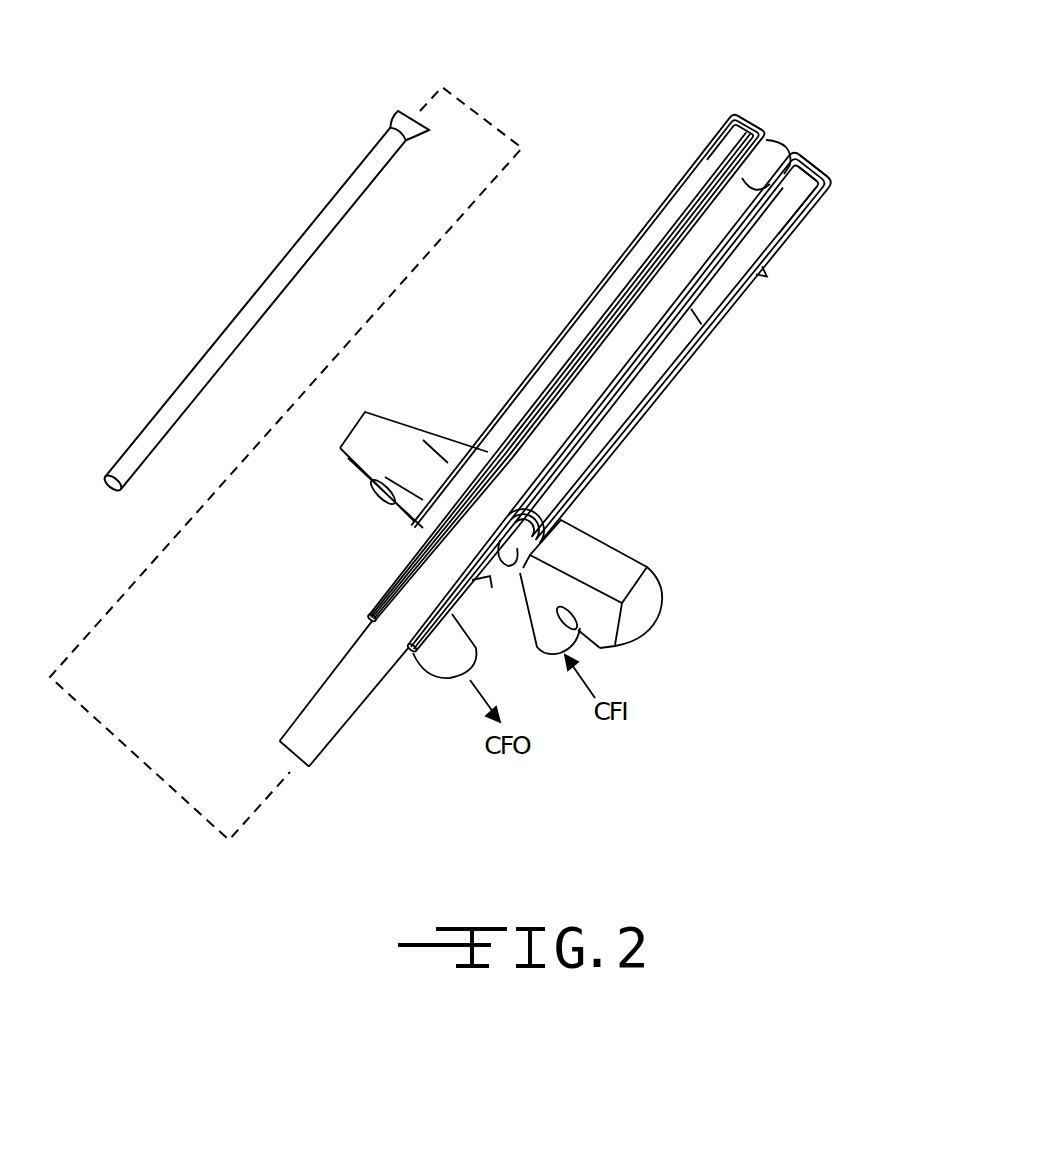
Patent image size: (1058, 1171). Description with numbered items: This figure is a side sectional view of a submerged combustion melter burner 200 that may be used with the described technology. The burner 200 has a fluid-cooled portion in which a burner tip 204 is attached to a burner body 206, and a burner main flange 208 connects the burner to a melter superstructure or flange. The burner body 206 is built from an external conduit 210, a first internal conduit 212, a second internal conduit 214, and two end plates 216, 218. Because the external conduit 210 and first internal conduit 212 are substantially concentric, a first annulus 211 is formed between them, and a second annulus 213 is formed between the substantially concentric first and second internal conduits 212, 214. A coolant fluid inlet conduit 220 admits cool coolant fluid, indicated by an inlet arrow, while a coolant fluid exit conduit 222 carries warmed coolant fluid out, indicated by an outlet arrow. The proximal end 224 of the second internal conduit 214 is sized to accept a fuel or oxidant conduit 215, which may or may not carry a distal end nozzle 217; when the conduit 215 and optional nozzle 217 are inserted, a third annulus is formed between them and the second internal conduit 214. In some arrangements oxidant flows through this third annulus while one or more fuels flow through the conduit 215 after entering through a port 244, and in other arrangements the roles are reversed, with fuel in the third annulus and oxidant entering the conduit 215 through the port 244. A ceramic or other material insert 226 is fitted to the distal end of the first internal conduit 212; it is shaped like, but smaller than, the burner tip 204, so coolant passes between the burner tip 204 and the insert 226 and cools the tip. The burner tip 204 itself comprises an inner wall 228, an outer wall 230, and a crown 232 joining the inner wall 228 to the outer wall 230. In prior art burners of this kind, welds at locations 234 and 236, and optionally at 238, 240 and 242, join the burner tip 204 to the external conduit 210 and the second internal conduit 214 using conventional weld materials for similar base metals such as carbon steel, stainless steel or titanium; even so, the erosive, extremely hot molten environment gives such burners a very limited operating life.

The burner 200 is at (790, 370).
The burner tip 204 is at (832, 190).
The burner body 206 is at (680, 380).
The burner main flange 208 is at (622, 548).
The external conduit 210 is at (617, 452).
The first annulus 211 is at (537, 392).
The first internal conduit 212 is at (745, 272).
The second annulus 213 is at (502, 450).
The second internal conduit 214 is at (693, 312).
The fuel or oxidant conduit 215 is at (250, 300).
The end plate 216 is at (481, 585).
The distal end nozzle 217 is at (398, 113).
The end plate 218 is at (410, 657).
The coolant fluid inlet conduit 220 is at (543, 637).
The coolant fluid exit conduit 222 is at (452, 668).
The proximal end 224 is at (312, 700).
The insert 226 is at (818, 160).
The inner wall 228 is at (767, 208).
The outer wall 230 is at (820, 205).
The crown 232 is at (826, 170).
The weld location 234 is at (692, 177).
The weld location 236 is at (678, 222).
The optional weld location 238 is at (602, 367).
The optional weld location 240 is at (733, 130).
The optional weld location 242 is at (778, 148).
The port 244 is at (300, 772).